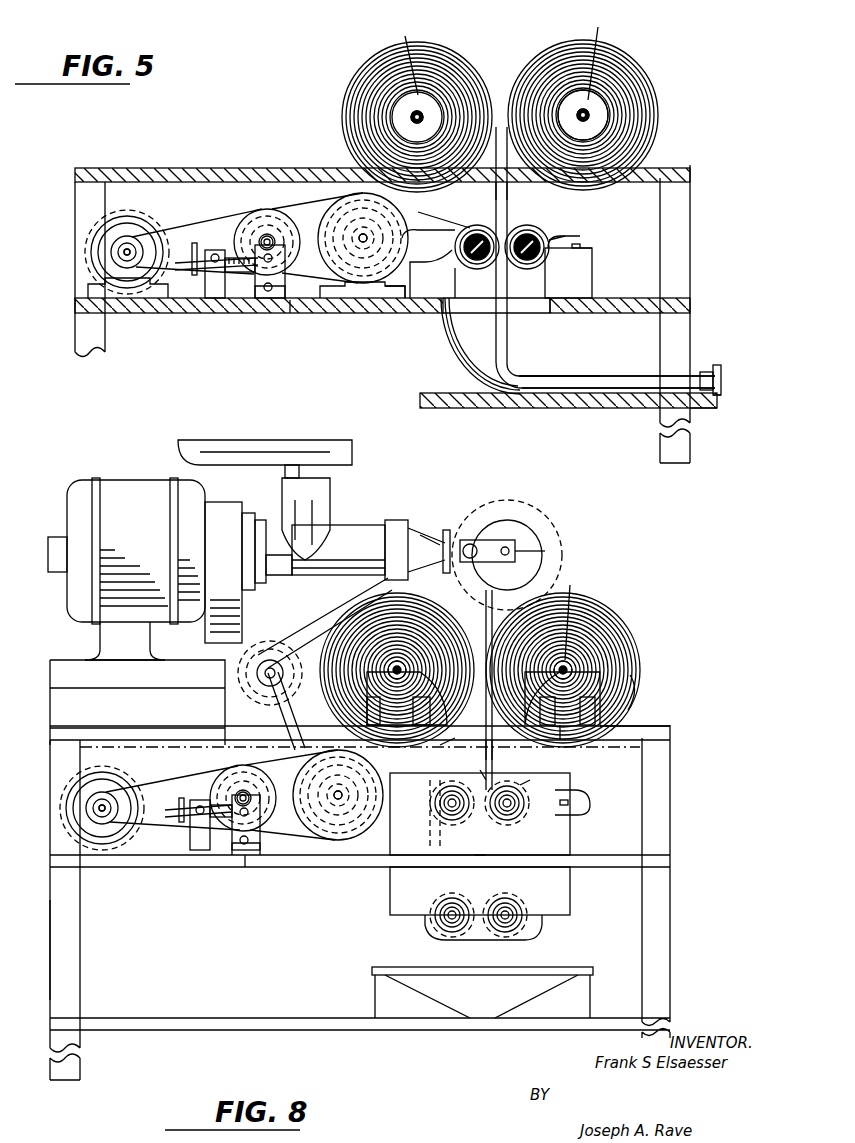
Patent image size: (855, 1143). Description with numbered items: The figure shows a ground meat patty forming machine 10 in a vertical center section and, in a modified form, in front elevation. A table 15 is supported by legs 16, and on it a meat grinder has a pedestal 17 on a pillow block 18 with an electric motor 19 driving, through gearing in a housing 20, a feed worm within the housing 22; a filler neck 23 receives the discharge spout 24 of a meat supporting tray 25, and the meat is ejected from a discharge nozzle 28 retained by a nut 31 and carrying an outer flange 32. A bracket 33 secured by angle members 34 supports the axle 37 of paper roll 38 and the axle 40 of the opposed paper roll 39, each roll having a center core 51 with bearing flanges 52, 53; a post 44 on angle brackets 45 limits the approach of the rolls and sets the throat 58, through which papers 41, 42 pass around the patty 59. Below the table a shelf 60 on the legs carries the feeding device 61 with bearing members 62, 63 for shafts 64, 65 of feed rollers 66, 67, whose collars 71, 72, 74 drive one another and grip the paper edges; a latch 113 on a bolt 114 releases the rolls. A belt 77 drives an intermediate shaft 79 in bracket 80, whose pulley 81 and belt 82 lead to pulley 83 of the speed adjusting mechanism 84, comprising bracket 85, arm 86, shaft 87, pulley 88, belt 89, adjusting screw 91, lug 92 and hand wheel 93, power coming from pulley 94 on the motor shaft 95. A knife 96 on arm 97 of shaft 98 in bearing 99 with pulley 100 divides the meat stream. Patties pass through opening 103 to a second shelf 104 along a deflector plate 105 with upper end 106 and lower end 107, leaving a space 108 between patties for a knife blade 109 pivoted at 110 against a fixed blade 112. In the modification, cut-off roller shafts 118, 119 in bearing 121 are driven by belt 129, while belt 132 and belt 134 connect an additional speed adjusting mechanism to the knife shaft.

In FIG. 8, the frame 10 is at (39, 762).
In FIG. 5, the table 15 is at (165, 172).
In FIG. 8, the table 15 is at (665, 728).
In FIG. 5, the legs 16 is at (680, 257).
In FIG. 8, the legs 16 is at (80, 938).
In FIG. 8, the pedestal 17 is at (100, 640).
In FIG. 8, the pillow block 18 is at (50, 703).
In FIG. 8, the electric motor 19 is at (115, 492).
In FIG. 8, the housing 20 is at (242, 616).
In FIG. 8, the housing 22 is at (335, 528).
In FIG. 8, the filler neck 23 is at (318, 495).
In FIG. 8, the discharge spout 24 is at (300, 470).
In FIG. 8, the meat supporting tray 25 is at (270, 445).
In FIG. 8, the discharge nozzle 28 is at (427, 540).
In FIG. 8, the nut 31 is at (395, 520).
In FIG. 8, the flange 32 is at (448, 530).
In FIG. 8, the bracket 33 is at (628, 676).
In FIG. 8, the angle members 34 is at (585, 745).
In FIG. 5, the axle 37 is at (600, 115).
In FIG. 8, the axle 37 is at (572, 665).
In FIG. 5, the paper roll 38 is at (650, 90).
In FIG. 8, the paper roll 38 is at (620, 610).
In FIG. 5, the paper roll 39 is at (440, 60).
In FIG. 8, the paper roll 39 is at (420, 606).
In FIG. 5, the axle 40 is at (410, 117).
In FIG. 8, the axle 40 is at (402, 665).
In FIG. 5, the paper 41 is at (496, 205).
In FIG. 8, the paper 41 is at (470, 756).
In FIG. 5, the paper 42 is at (510, 212).
In FIG. 8, the paper 42 is at (494, 765).
In FIG. 8, the post 44 is at (540, 705).
In FIG. 8, the angle brackets 45 is at (480, 770).
In FIG. 5, the center core 51 is at (501, 54).
In FIG. 8, the center core 51 is at (577, 613).
In FIG. 8, the bearing flange 52 is at (582, 640).
In FIG. 5, the bearing flange 53 is at (632, 72).
In FIG. 5, the throat 58 is at (503, 127).
In FIG. 8, the throat 58 is at (490, 640).
In FIG. 5, the patty 59 is at (510, 190).
In FIG. 5, the shelf 60 is at (300, 314).
In FIG. 8, the shelf 60 is at (245, 868).
In FIG. 5, the feeding device 61 is at (600, 222).
In FIG. 8, the feeding device 61 is at (590, 793).
In FIG. 5, the bearing member 62 is at (592, 280).
In FIG. 8, the bearing member 63 is at (572, 840).
In FIG. 5, the shaft 64 is at (477, 269).
In FIG. 8, the shaft 64 is at (438, 803).
In FIG. 5, the shaft 65 is at (549, 262).
In FIG. 8, the shaft 65 is at (522, 806).
In FIG. 5, the feed roller 66 is at (458, 245).
In FIG. 5, the feed roller 67 is at (548, 246).
In FIG. 8, the feed roller 67 is at (518, 810).
In FIG. 8, the collar 71 is at (522, 788).
In FIG. 5, the collar 72 is at (462, 266).
In FIG. 5, the collar 74 is at (527, 269).
In FIG. 5, the belt 77 is at (420, 216).
In FIG. 5, the intermediate shaft 79 is at (396, 300).
In FIG. 5, the bracket 80 is at (365, 295).
In FIG. 8, the bracket 80 is at (330, 845).
In FIG. 5, the pulley 81 is at (342, 290).
In FIG. 8, the pulley 81 is at (350, 842).
In FIG. 5, the belt 82 is at (285, 287).
In FIG. 8, the belt 82 is at (285, 830).
In FIG. 8, the pulley 83 is at (296, 660).
In FIG. 5, the speed adjusting mechanism 84 is at (252, 338).
In FIG. 8, the speed adjusting mechanism 84 is at (203, 757).
In FIG. 5, the bracket 85 is at (237, 296).
In FIG. 8, the bracket 85 is at (248, 776).
In FIG. 5, the arm 86 is at (276, 300).
In FIG. 8, the arm 86 is at (256, 852).
In FIG. 5, the shaft 87 is at (270, 236).
In FIG. 8, the shaft 87 is at (240, 790).
In FIG. 5, the pulley 88 is at (255, 222).
In FIG. 8, the pulley 88 is at (266, 815).
In FIG. 5, the belt 89 is at (197, 236).
In FIG. 8, the belt 89 is at (165, 788).
In FIG. 5, the adjusting screw 91 is at (240, 276).
In FIG. 8, the adjusting screw 91 is at (212, 852).
In FIG. 5, the lug 92 is at (205, 300).
In FIG. 8, the lug 92 is at (185, 852).
In FIG. 5, the hand wheel 93 is at (194, 277).
In FIG. 8, the hand wheel 93 is at (181, 825).
In FIG. 5, the pulley 94 is at (125, 266).
In FIG. 8, the pulley 94 is at (100, 825).
In FIG. 5, the motor shaft 95 is at (137, 240).
In FIG. 8, the motor shaft 95 is at (115, 790).
In FIG. 8, the knife 96 is at (472, 545).
In FIG. 8, the arm 97 is at (492, 545).
In FIG. 8, the shaft 98 is at (540, 532).
In FIG. 8, the bearing 99 is at (547, 552).
In FIG. 8, the pulley 100 is at (520, 528).
In FIG. 5, the opening 103 is at (548, 313).
In FIG. 8, the opening 103 is at (505, 856).
In FIG. 5, the shelf 104 is at (480, 408).
In FIG. 8, the shelf 104 is at (330, 1028).
In FIG. 5, the deflector plate 105 is at (478, 368).
In FIG. 5, the upper end 106 is at (458, 312).
In FIG. 5, the lower end 107 is at (700, 408).
In FIG. 5, the space 108 is at (530, 378).
In FIG. 5, the knife blade 109 is at (722, 396).
In FIG. 5, the pivot 110 is at (708, 372).
In FIG. 5, the fixed blade 112 is at (722, 380).
In FIG. 5, the latch 113 is at (586, 250).
In FIG. 5, the bolt 114 is at (562, 248).
In FIG. 8, the shaft 118 is at (435, 935).
In FIG. 8, the shaft 119 is at (522, 926).
In FIG. 8, the bearing 121 is at (572, 880).
In FIG. 8, the belt 129 is at (425, 895).
In FIG. 8, the belt 132 is at (268, 722).
In FIG. 8, the belt 134 is at (320, 612).